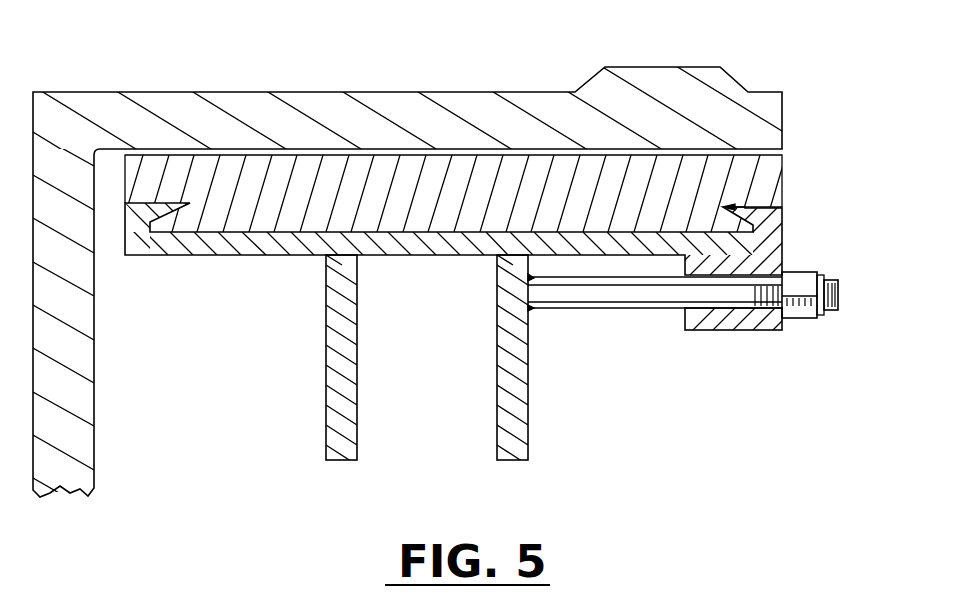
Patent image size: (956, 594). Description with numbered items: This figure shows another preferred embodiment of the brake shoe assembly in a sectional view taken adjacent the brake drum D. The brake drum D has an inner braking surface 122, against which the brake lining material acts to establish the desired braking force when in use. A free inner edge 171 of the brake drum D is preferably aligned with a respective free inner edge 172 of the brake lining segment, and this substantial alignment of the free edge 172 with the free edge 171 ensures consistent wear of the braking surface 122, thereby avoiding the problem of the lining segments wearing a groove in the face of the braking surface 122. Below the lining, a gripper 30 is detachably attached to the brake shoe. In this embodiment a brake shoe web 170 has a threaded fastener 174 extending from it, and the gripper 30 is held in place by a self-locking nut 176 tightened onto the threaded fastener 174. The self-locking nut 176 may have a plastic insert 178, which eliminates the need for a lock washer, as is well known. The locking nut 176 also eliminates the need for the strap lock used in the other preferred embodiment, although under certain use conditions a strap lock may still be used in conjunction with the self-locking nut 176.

The inner braking surface 122 is at (112, 155).
The brake drum D is at (738, 78).
The free inner edge of brake drum 171 is at (784, 120).
The free inner edge of brake lining segment 172 is at (784, 180).
The gripper 30 is at (784, 237).
The brake shoe web 170 is at (357, 431).
The threaded fastener 174 is at (608, 302).
The self-locking nut 176 is at (800, 318).
The plastic insert 178 is at (824, 317).